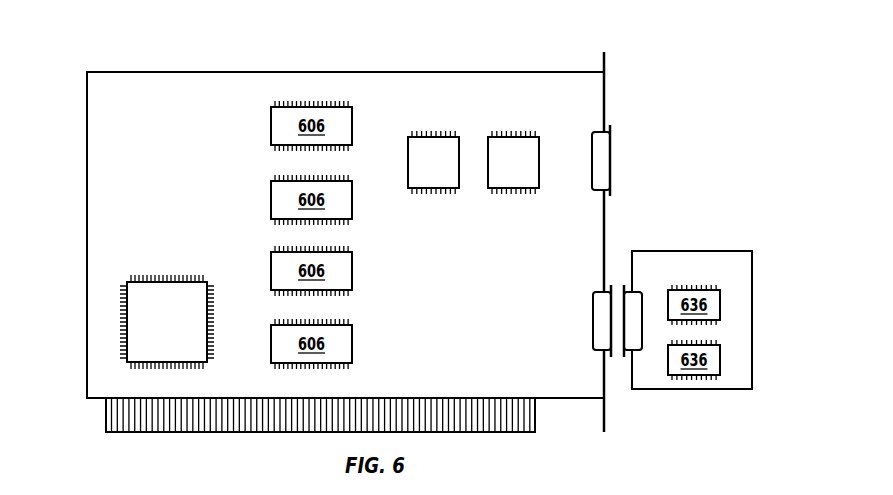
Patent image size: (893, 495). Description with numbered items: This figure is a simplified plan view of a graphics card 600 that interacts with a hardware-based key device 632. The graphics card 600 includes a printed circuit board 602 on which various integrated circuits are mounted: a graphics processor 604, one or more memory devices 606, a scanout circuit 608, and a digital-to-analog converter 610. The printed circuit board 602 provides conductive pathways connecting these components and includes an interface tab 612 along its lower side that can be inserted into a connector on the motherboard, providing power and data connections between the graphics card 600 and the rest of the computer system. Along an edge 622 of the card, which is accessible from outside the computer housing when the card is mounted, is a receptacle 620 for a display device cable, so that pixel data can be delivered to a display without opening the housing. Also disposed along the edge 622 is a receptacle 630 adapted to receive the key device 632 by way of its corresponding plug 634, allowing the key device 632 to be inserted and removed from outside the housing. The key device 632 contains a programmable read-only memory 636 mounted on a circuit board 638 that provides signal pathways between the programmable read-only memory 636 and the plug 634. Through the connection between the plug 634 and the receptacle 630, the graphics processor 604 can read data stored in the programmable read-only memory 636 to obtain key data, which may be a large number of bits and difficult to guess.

The graphics card 600 is at (744, 64).
The printed circuit board 602 is at (170, 72).
The graphics processor 604 is at (154, 340).
The memory devices 606 is at (311, 235).
The scanout circuit 608 is at (420, 173).
The digital-to-analog converter 610 is at (500, 173).
The interface tab 612 is at (106, 416).
The receptacle 620 is at (600, 162).
The edge 622 is at (605, 92).
The receptacle 630 is at (600, 320).
The key device 632 is at (695, 390).
The plug 634 is at (637, 300).
The programmable read-only memory 636 is at (694, 332).
The circuit board 638 is at (738, 382).